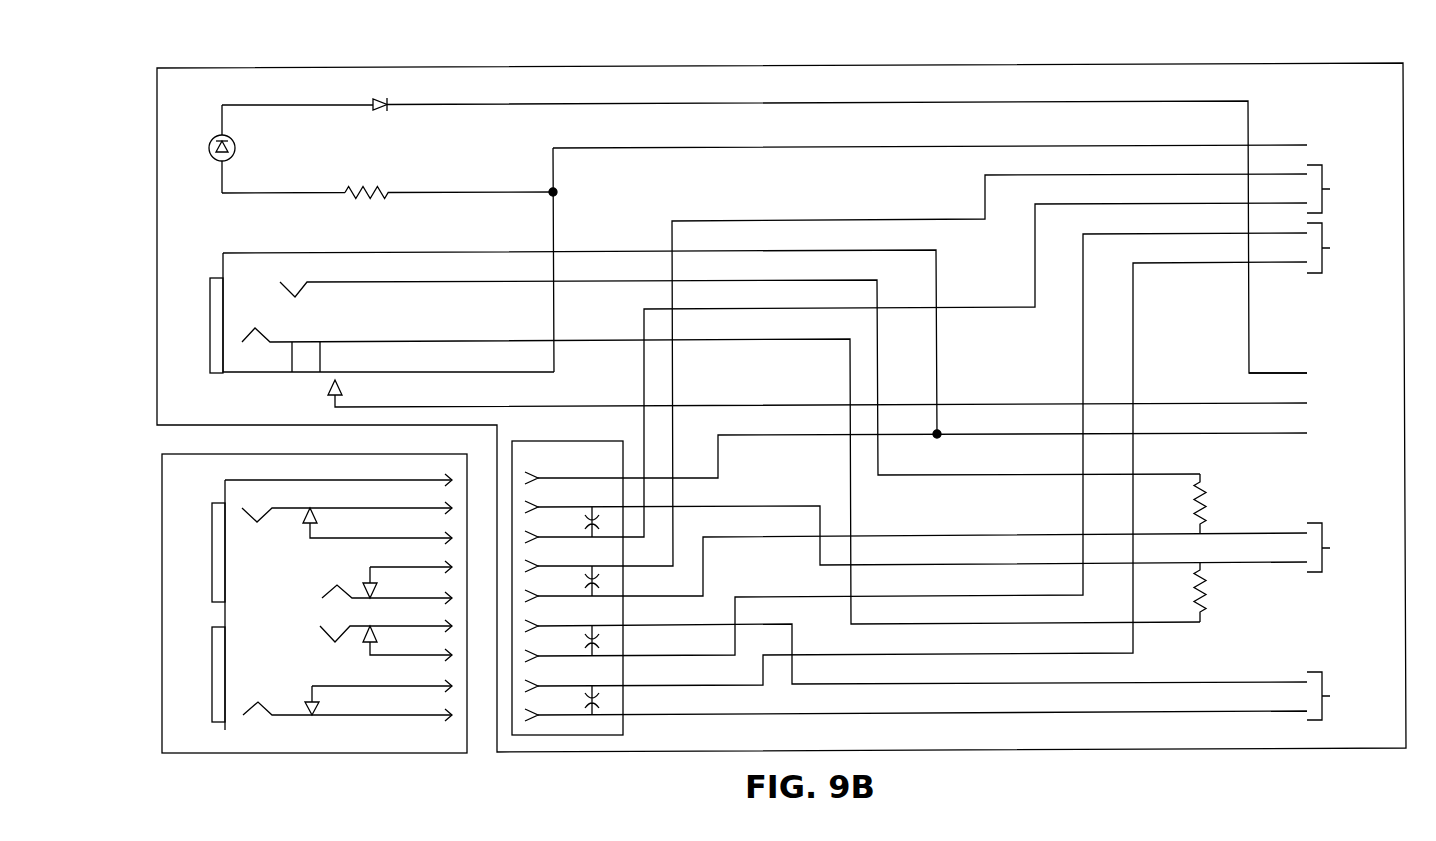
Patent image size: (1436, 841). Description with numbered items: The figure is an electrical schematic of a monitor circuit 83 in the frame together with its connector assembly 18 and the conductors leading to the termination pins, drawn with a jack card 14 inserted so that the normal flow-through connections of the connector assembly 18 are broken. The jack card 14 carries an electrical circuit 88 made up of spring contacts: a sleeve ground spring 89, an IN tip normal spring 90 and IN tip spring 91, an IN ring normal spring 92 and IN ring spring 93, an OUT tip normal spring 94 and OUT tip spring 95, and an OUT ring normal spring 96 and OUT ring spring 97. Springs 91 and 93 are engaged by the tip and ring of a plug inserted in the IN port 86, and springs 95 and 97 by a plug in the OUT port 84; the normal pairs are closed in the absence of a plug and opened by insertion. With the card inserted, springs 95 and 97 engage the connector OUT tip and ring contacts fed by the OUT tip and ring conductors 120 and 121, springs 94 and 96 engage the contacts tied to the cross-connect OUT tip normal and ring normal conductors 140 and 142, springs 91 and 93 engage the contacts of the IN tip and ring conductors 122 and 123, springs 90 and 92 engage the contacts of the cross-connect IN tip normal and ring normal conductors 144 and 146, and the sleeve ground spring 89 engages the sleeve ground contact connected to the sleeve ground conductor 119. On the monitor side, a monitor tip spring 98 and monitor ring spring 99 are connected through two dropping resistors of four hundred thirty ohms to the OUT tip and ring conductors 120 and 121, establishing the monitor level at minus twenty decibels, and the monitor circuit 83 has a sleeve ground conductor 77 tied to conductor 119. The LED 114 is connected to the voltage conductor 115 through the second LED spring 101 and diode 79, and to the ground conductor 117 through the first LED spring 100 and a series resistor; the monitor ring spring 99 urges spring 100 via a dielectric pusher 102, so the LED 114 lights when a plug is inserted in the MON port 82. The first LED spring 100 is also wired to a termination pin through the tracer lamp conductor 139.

The jack card 14 is at (183, 772).
The connector assembly 18 is at (615, 745).
The sleeve ground conductor 77 is at (275, 253).
The diode 79 is at (378, 90).
The monitor port 82 is at (208, 345).
The monitor circuit 83 is at (236, 382).
The OUT port 84 is at (212, 567).
The IN port 86 is at (212, 688).
The electrical circuit 88 is at (414, 741).
The sleeve ground spring 89 is at (255, 480).
The IN tip normal spring 90 is at (370, 655).
The IN tip spring 91 is at (353, 627).
The IN ring normal spring 92 is at (352, 687).
The IN ring spring 93 is at (282, 716).
The OUT tip normal spring 94 is at (382, 567).
The OUT tip spring 95 is at (355, 597).
The OUT ring normal spring 96 is at (309, 530).
The OUT ring spring 97 is at (285, 508).
The monitor tip spring 98 is at (325, 284).
The monitor ring spring 99 is at (445, 341).
The first LED spring 100 is at (285, 193).
The second LED spring 101 is at (299, 104).
The dielectric pusher 102 is at (291, 356).
The LED 114 is at (208, 142).
The voltage conductor 115 is at (1284, 374).
The ground conductor 117 is at (1289, 403).
The sleeve ground conductor 119 is at (1302, 436).
The OUT tip conductor 120 is at (1291, 533).
The OUT ring conductor 121 is at (1291, 564).
The IN tip conductor 122 is at (1259, 681).
The IN ring conductor 123 is at (1258, 712).
The tracer lamp conductor 139 is at (1289, 144).
The cross-connect OUT tip normal conductor 140 is at (1299, 175).
The cross-connect OUT ring normal conductor 142 is at (1300, 204).
The cross-connect IN tip normal conductor 144 is at (1298, 234).
The cross-connect IN ring normal conductor 146 is at (1291, 264).